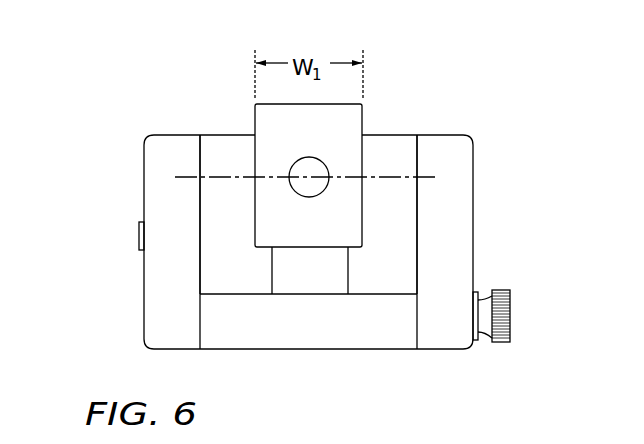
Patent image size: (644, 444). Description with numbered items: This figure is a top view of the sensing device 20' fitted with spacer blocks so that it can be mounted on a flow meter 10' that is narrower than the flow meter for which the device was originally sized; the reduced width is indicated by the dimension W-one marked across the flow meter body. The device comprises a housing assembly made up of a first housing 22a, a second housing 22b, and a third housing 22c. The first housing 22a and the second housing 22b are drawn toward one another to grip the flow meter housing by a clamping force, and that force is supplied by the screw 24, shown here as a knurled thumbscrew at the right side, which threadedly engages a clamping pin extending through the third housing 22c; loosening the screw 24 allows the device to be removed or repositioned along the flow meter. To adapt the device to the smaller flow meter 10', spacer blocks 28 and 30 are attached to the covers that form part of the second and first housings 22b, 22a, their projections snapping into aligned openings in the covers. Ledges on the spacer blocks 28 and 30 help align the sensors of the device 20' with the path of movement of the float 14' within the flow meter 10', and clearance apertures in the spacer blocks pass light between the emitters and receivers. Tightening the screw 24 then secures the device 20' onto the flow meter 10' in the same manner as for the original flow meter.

The flow meter 10' is at (374, 132).
The float 14' is at (237, 125).
The device 20' is at (353, 283).
The first housing 22a is at (526, 242).
The second housing 22b is at (88, 242).
The third housing 22c is at (315, 349).
The screw 24 is at (543, 316).
The spacer block 28 is at (397, 133).
The spacer block 30 is at (215, 135).